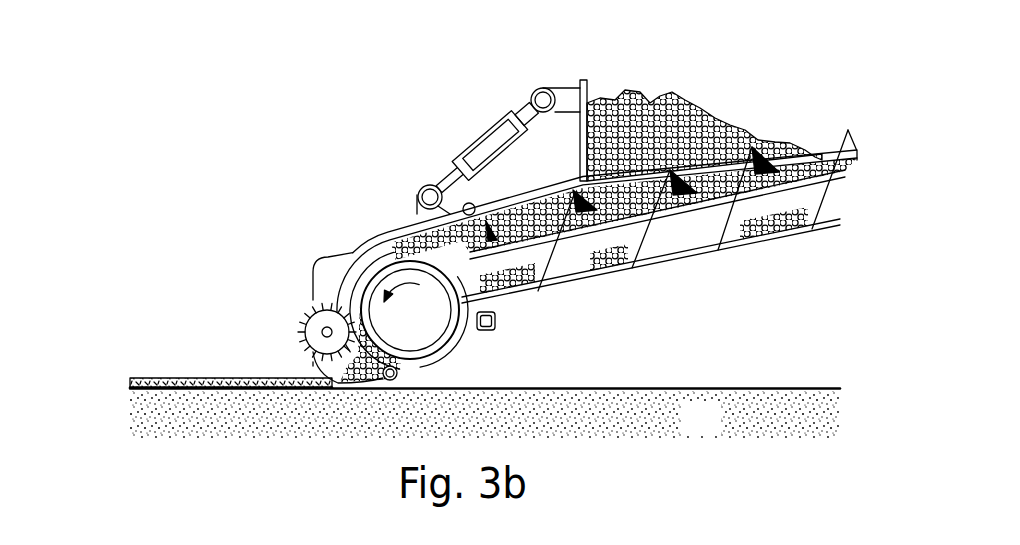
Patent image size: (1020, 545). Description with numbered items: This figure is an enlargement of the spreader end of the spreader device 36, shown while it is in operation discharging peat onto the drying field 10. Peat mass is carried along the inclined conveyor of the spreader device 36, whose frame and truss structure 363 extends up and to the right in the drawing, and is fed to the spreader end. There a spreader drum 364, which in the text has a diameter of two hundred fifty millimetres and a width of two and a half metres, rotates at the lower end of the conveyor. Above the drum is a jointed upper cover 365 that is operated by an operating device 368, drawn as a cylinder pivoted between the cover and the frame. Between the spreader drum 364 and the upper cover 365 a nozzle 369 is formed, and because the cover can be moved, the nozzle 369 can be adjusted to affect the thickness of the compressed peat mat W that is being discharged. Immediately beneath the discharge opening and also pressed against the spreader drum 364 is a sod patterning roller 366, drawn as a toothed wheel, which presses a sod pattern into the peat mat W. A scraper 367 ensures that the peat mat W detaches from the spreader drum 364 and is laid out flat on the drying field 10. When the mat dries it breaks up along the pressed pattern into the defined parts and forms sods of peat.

The drying field 10 is at (717, 432).
The peat mat W is at (163, 377).
The spreader device 36 is at (378, 200).
The conveyor frame truss 363 is at (713, 257).
The spreader drum 364 is at (434, 328).
The jointed upper cover 365 is at (372, 248).
The sod patterning roller 366 is at (312, 311).
The scraper 367 is at (297, 377).
The operating device 368 is at (493, 125).
The nozzle 369 is at (327, 255).